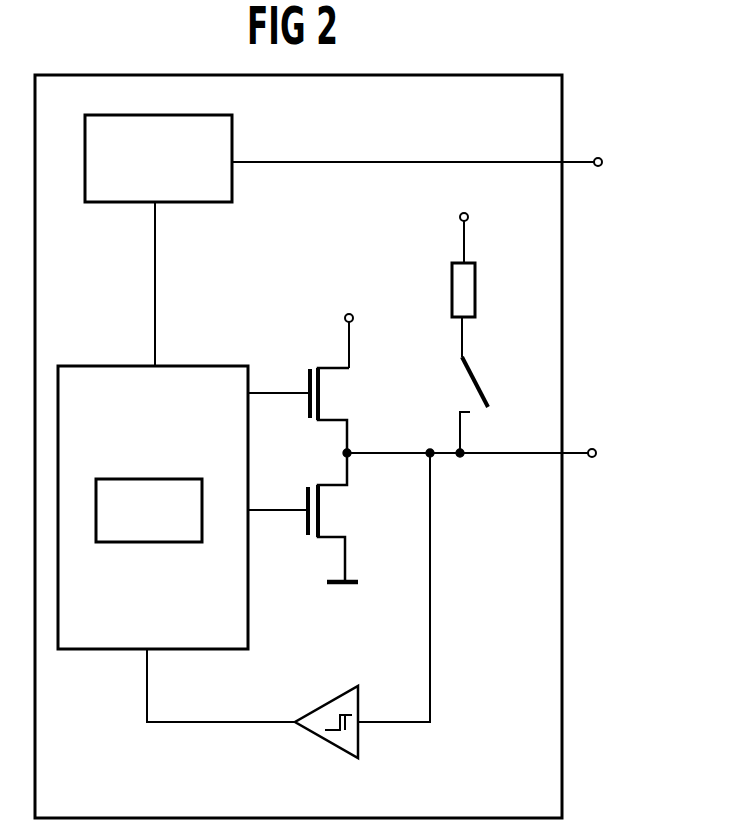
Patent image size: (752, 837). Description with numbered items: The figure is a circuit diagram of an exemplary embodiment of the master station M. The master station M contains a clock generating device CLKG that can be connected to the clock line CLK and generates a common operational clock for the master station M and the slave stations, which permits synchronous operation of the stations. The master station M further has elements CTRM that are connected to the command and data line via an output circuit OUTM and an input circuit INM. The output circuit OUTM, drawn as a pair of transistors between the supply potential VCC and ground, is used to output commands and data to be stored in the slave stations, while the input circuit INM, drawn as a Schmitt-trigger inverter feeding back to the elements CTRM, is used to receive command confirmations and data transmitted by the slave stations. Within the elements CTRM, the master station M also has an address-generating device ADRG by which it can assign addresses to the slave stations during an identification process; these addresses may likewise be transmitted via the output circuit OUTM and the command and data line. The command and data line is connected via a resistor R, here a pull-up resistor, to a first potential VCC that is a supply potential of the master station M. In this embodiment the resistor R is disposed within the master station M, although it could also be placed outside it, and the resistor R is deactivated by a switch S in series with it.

The master station M is at (478, 75).
The clock generating device CLKG is at (158, 158).
The clock line CLK is at (446, 160).
The further elements CTRM is at (153, 507).
The address-generating device ADRG is at (149, 510).
The first potential VCC is at (407, 271).
The output circuit OUTM is at (372, 597).
The resistor R is at (475, 290).
The switch S is at (480, 387).
The input circuit INM is at (327, 740).